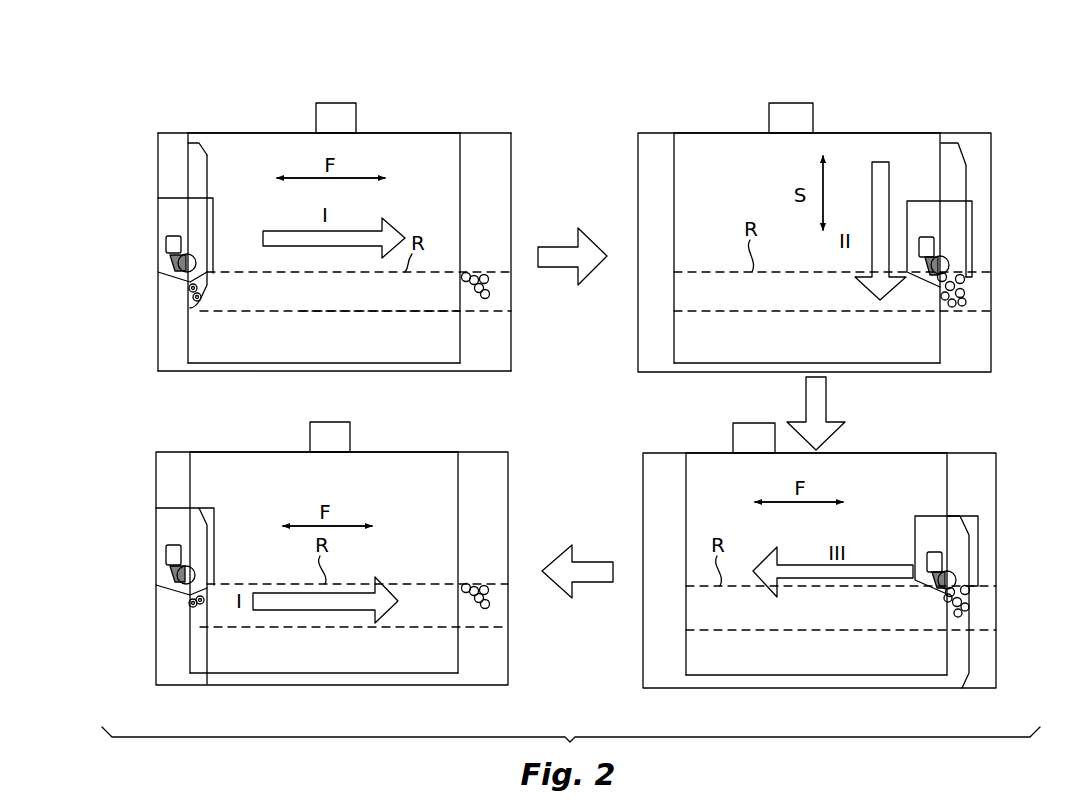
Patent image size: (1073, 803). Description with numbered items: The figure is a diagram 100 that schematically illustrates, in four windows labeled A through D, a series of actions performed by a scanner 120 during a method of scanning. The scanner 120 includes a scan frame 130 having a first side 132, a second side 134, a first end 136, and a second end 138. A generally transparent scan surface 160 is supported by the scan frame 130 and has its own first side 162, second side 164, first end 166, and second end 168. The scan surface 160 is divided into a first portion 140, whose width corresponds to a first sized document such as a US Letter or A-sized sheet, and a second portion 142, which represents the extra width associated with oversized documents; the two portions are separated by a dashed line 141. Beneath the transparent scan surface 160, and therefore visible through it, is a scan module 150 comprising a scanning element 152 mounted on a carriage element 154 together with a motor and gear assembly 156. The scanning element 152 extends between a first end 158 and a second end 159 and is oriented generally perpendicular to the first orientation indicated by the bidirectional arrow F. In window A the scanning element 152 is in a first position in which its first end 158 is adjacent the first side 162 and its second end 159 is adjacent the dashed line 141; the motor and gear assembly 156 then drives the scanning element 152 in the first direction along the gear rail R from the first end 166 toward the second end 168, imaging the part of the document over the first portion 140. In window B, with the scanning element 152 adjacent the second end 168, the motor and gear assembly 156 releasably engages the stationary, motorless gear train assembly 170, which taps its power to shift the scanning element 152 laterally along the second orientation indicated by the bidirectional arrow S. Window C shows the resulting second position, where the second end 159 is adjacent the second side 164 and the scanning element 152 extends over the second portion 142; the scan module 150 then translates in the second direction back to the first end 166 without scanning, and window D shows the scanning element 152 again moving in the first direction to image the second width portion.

The diagram 100 is at (376, 100).
The scanner 120 is at (566, 398).
The scan frame 130 is at (544, 387).
The first side 132 is at (283, 133).
The second side 134 is at (275, 371).
The first end 136 is at (158, 342).
The second end 138 is at (511, 180).
The first portion 140 is at (1030, 469).
The dashed line 141 is at (388, 312).
The second portion 142 is at (570, 494).
The scan module 150 is at (567, 399).
The scanning element 152 is at (215, 145).
The carriage element 154 is at (172, 212).
The motor and gear assembly 156 is at (166, 245).
The first end 158 is at (188, 165).
The second end 159 is at (190, 300).
The scan surface 160 is at (475, 180).
The first side 162 is at (252, 133).
The second side 164 is at (383, 363).
The first end 166 is at (188, 166).
The second end 168 is at (460, 250).
The gear train assembly 170 is at (492, 287).